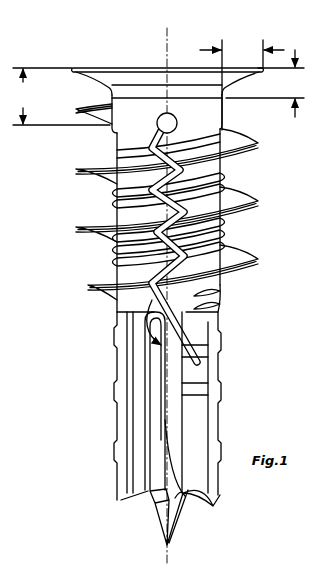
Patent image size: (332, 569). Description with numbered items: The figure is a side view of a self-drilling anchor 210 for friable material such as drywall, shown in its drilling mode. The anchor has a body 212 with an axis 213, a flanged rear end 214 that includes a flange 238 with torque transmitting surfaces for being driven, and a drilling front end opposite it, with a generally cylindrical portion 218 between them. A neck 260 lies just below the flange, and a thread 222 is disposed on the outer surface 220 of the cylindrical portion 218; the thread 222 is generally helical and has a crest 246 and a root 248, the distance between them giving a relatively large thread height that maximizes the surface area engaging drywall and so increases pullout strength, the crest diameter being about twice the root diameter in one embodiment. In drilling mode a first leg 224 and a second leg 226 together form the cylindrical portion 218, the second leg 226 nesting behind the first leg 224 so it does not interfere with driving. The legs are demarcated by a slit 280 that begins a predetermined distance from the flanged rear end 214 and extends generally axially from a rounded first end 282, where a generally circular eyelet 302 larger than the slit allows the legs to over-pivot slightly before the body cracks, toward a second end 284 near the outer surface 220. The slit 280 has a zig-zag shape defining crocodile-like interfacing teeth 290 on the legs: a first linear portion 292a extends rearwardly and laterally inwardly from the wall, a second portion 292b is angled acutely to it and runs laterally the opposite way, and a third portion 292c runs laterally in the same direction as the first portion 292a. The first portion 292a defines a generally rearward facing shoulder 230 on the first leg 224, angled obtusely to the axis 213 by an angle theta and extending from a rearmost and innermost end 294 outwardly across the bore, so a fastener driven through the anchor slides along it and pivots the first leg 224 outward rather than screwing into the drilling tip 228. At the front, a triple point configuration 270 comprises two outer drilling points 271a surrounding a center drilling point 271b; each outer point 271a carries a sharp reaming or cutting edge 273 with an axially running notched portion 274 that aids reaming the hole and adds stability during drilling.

The self-drilling anchor 210 is at (62, 63).
The body 212 is at (229, 235).
The axis 213 is at (166, 39).
The flanged rear end 214 is at (179, 64).
The generally cylindrical portion 218 is at (102, 193).
The outer surface 220 is at (233, 157).
The thread 222 is at (77, 227).
The first leg 224 is at (131, 303).
The second leg 226 is at (196, 313).
The drilling tip 228 is at (197, 415).
The rearward facing shoulder 230 is at (201, 358).
The flange 238 is at (97, 67).
The crest 246 is at (77, 169).
The root 248 is at (224, 186).
The neck 260 is at (110, 91).
The triple point configuration 270 is at (137, 543).
The outer drilling points 271a is at (126, 500).
The center drilling point 271b is at (168, 543).
The reaming or cutting edge 273 is at (118, 413).
The notched portion 274 is at (110, 382).
The slit 280 is at (222, 175).
The first end 282 is at (156, 124).
The second end 284 is at (203, 378).
The interfacing teeth 290 is at (258, 201).
The first linear portion 292a is at (201, 343).
The second portion 292b is at (198, 294).
The third portion 292c is at (118, 255).
The rearmost and innermost end 294 is at (100, 289).
The eyelet 302 is at (178, 124).